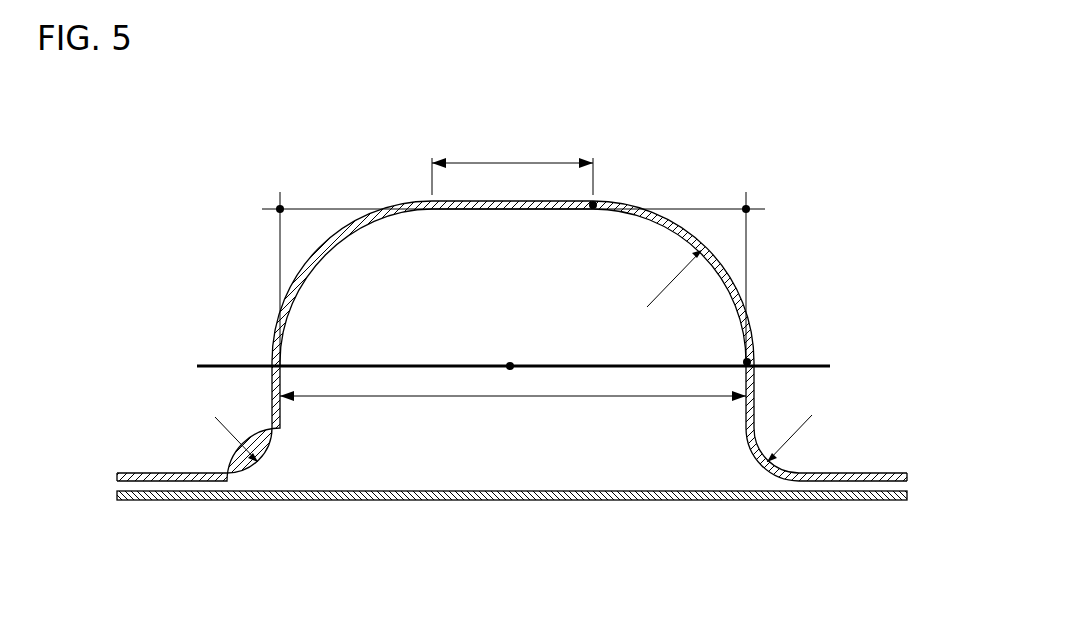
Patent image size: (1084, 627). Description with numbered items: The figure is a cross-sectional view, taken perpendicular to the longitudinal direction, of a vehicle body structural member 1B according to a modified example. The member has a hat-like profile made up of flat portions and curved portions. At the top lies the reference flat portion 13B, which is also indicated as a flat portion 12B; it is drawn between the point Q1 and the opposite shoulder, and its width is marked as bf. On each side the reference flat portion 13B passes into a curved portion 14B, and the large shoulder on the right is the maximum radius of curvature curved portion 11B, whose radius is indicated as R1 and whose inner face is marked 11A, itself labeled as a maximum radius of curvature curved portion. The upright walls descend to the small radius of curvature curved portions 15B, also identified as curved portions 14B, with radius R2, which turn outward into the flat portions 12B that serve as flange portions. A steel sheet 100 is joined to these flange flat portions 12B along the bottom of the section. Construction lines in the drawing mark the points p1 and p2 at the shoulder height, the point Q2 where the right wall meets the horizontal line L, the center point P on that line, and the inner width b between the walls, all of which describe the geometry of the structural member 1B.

The structural member 1B is at (158, 161).
The flat portion 12B is at (272, 353).
The reference flat portion 13B is at (513, 212).
The curved portion 14B is at (317, 248).
The maximum radius of curvature curved portion 11B is at (721, 262).
The maximum radius of curvature curved portion 11A is at (728, 290).
The small radius of curvature curved portion 15B is at (259, 464).
The steel sheet 100 is at (506, 501).
The radius of upper curved portion R1 is at (660, 282).
The radius of lower curved portion R2 is at (513, 431).
The left reference point p1 is at (279, 208).
The right reference point p2 is at (747, 208).
The top plate end point Q1 is at (594, 205).
The wall point on line L Q2 is at (748, 362).
The center point P is at (511, 366).
The reference line L is at (502, 367).
The width b is at (513, 413).
The flat top width bf is at (512, 163).